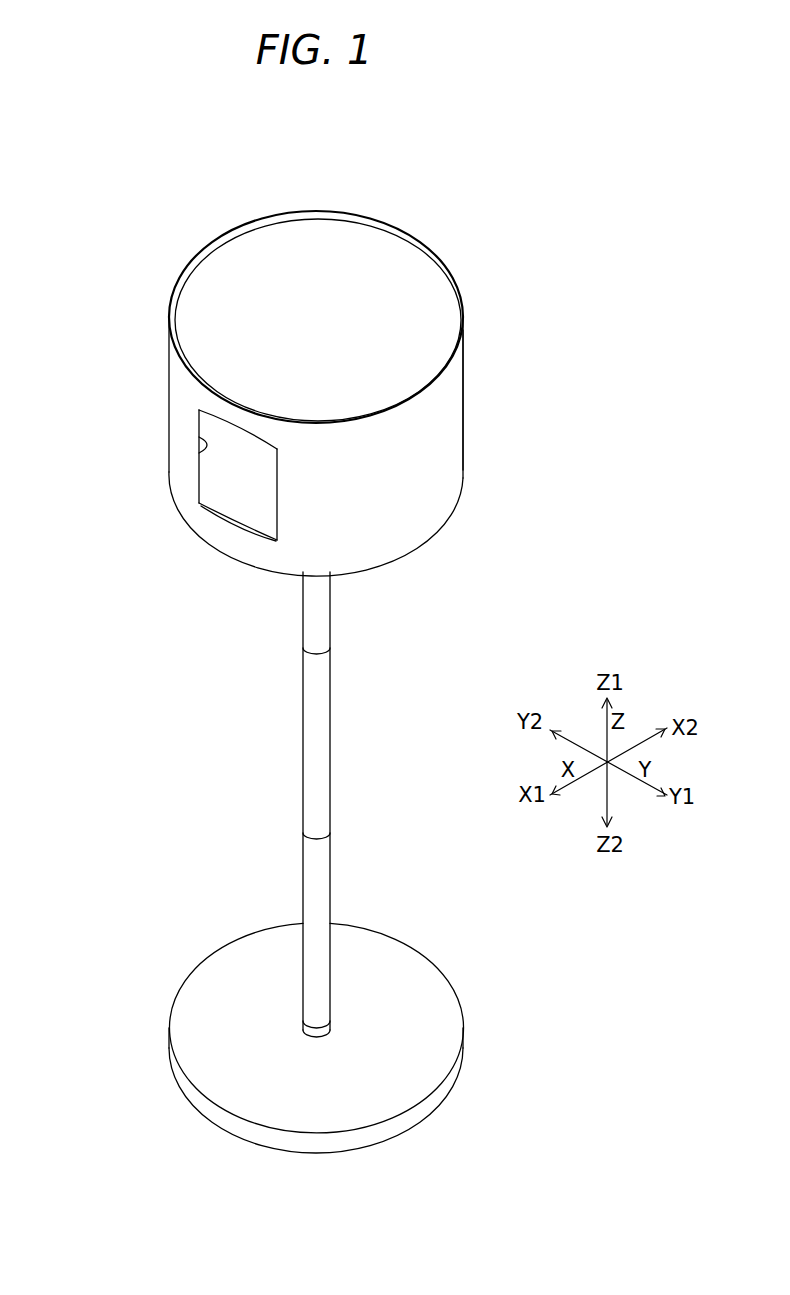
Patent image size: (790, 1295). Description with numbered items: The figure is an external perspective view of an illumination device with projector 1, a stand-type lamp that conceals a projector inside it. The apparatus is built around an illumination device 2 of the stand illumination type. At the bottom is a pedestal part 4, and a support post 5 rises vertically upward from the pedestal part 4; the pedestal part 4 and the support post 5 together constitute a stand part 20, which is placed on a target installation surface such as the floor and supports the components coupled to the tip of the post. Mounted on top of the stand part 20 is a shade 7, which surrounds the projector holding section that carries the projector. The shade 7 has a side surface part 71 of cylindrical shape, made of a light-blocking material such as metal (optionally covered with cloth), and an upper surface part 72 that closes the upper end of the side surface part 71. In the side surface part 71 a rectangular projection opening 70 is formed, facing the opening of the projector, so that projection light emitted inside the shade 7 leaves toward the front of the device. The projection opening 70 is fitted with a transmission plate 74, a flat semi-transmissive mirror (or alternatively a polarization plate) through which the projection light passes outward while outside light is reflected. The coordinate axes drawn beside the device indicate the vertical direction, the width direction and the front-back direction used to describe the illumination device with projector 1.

The illumination device with projector 1 is at (100, 199).
The illumination device 2 is at (153, 343).
The shade 7 is at (168, 392).
The projection opening 70 is at (199, 452).
The side surface part 71 is at (452, 412).
The upper surface part 72 is at (430, 312).
The transmission plate 74 is at (217, 481).
The stand part 20 is at (164, 773).
The support post 5 is at (303, 757).
The pedestal part 4 is at (247, 957).